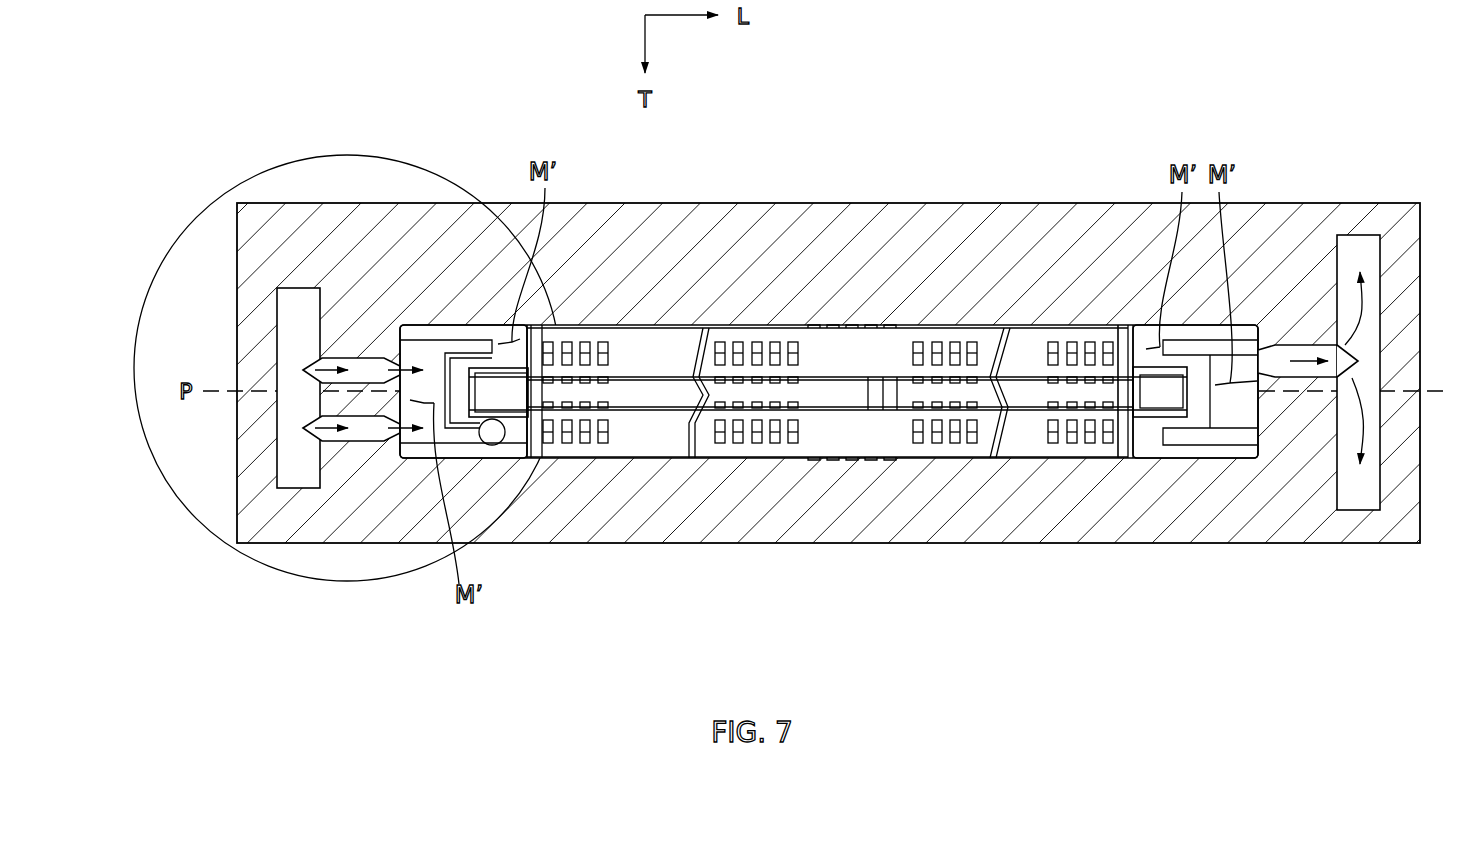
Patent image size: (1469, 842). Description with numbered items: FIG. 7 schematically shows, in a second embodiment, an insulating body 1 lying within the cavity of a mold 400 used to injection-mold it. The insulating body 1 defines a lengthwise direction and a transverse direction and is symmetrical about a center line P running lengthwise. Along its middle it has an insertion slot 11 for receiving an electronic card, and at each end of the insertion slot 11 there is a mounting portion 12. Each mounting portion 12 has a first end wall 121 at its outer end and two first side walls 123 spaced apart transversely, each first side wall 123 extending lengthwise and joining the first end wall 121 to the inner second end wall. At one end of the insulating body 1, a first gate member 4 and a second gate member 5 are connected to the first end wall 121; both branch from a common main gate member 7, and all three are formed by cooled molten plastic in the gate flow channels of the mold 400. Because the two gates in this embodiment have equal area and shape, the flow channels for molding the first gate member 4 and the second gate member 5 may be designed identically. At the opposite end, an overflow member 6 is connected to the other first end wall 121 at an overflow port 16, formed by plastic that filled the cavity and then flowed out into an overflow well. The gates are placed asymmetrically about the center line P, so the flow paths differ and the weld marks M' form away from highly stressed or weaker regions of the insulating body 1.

The mold 400 is at (925, 200).
The insulating body 1 is at (637, 447).
The insertion slot 11 is at (658, 402).
The mounting portion 12 is at (423, 449).
The first end wall 121 is at (417, 348).
The first side wall 123 is at (457, 332).
The first gate member 4 is at (373, 437).
The second gate member 5 is at (360, 361).
The overflow member 6 is at (1305, 353).
The main gate member 7 is at (282, 446).
The overflow port 16 is at (1275, 347).